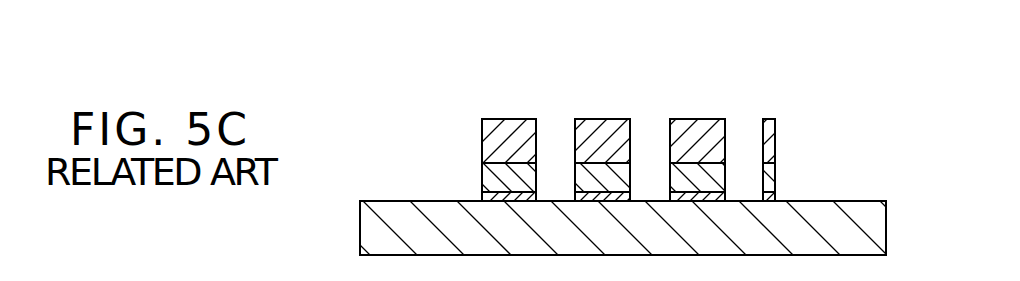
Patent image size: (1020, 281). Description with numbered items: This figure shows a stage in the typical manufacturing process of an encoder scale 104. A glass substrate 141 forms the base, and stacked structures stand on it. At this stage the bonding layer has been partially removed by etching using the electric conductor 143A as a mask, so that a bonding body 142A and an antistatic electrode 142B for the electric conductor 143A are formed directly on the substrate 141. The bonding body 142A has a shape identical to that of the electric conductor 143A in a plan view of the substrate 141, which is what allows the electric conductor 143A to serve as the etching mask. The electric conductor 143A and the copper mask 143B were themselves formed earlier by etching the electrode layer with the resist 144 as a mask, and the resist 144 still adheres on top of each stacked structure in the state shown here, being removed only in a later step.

The encoder scale 104 is at (650, 73).
The glass substrate 141 is at (377, 230).
The bonding body 142A is at (482, 197).
The antistatic electrode 142B is at (777, 197).
The electric conductor 143A is at (482, 172).
The copper mask 143B is at (777, 172).
The resist 144 is at (520, 118).